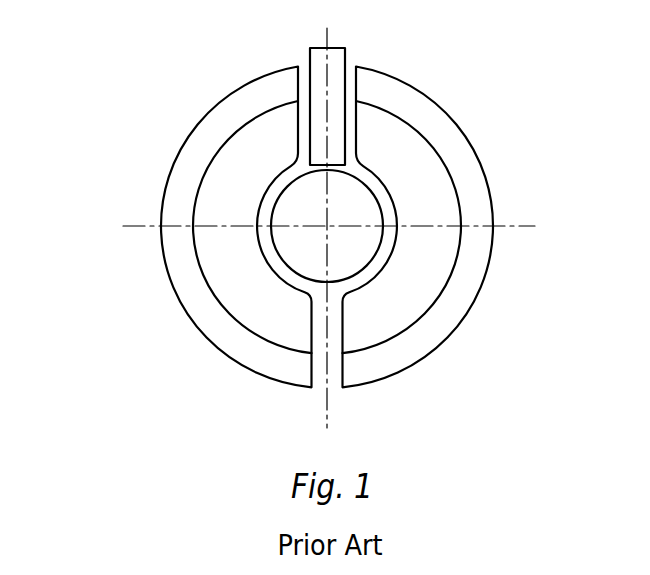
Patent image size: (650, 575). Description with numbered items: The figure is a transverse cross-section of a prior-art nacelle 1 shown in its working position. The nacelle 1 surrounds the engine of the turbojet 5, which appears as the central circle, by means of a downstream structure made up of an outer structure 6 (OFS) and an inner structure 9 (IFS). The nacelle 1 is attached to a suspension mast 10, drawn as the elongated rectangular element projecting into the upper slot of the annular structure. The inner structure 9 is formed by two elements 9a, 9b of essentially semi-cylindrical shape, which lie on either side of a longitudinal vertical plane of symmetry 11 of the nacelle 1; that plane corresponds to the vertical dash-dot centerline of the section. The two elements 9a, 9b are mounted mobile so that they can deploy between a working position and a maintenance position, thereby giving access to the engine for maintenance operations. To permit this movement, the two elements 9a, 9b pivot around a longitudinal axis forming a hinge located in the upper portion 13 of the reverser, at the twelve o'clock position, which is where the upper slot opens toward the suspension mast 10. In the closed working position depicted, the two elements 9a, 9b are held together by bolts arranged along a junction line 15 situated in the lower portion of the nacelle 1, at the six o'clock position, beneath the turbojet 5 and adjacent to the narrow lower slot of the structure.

The nacelle 1 is at (290, 225).
The turbojet 5 is at (298, 247).
The outer structure 6 is at (468, 202).
The inner structure 9 is at (323, 227).
The element 9a is at (268, 137).
The element 9b is at (437, 227).
The suspension mast 10 is at (332, 68).
The longitudinal vertical plane of symmetry 11 is at (330, 363).
The upper portion 13 is at (355, 88).
The junction line 15 is at (312, 319).